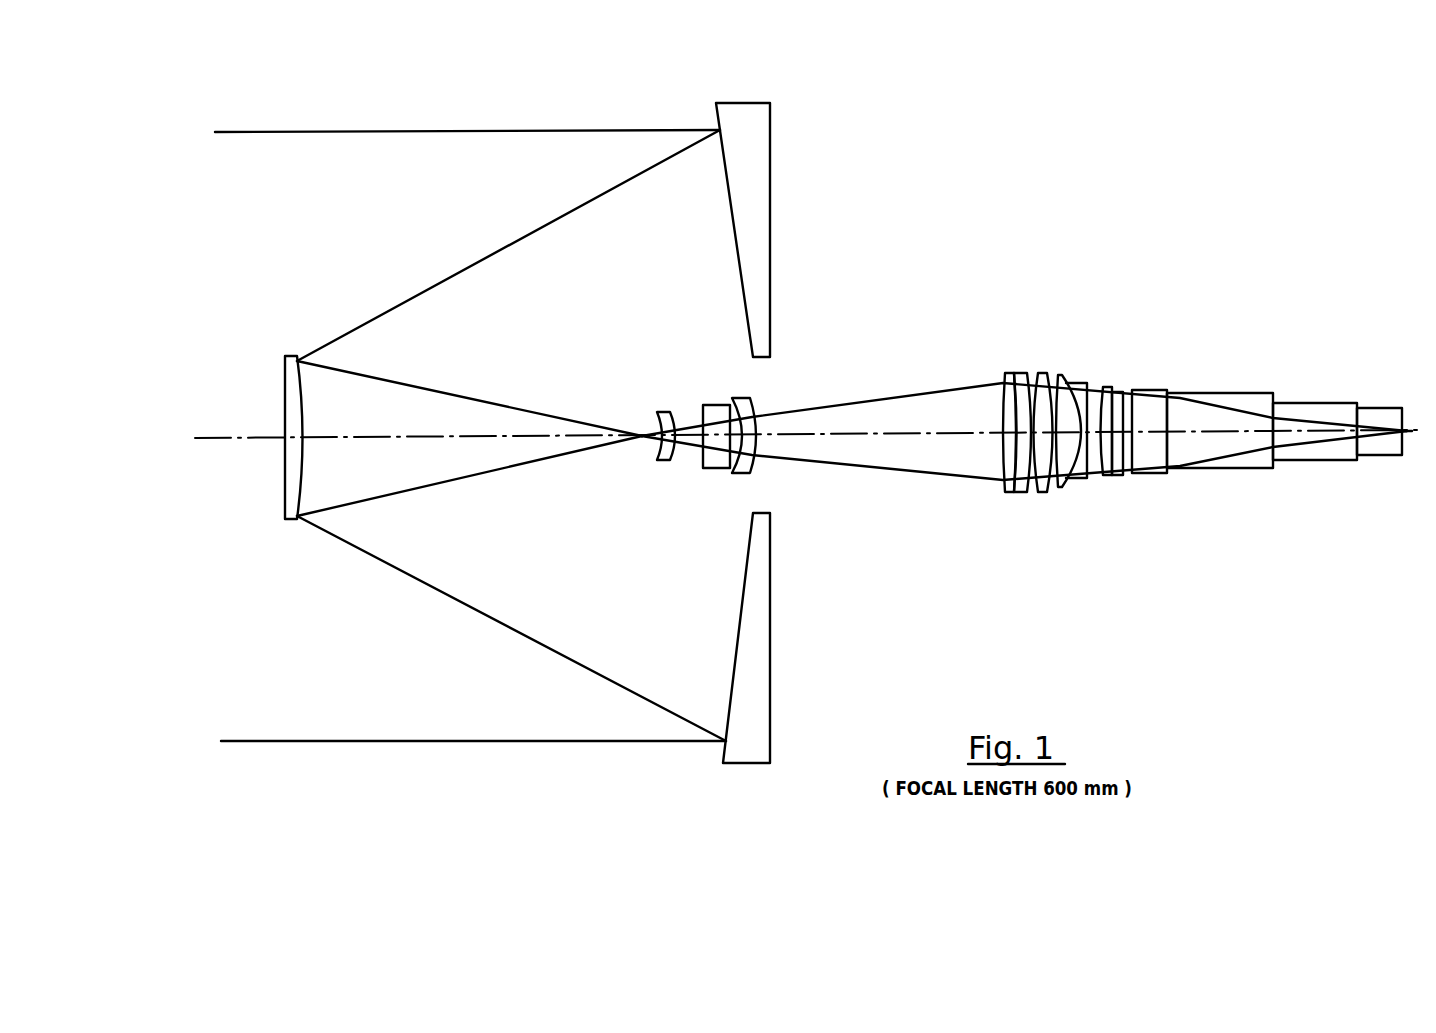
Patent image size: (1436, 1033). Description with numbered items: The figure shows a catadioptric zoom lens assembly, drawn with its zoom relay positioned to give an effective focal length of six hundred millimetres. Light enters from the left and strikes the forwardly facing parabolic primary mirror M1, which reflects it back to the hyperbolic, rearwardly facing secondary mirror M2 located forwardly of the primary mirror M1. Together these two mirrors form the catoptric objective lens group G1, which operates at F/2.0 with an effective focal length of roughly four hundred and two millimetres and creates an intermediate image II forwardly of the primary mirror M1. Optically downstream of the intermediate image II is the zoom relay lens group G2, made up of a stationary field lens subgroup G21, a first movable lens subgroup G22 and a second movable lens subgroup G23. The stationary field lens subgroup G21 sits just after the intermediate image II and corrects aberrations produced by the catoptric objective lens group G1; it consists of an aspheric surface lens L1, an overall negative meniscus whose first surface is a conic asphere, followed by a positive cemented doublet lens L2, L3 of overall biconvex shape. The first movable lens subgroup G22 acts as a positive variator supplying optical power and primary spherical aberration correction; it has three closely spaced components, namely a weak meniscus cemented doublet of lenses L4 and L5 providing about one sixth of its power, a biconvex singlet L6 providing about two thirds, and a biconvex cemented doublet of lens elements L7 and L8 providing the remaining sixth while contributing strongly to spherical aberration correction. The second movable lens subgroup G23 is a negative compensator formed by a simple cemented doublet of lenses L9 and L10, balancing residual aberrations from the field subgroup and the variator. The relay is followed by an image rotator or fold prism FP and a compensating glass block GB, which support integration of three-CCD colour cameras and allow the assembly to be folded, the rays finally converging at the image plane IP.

The primary mirror M1 is at (730, 103).
The secondary mirror M2 is at (283, 378).
The intermediate image II is at (642, 436).
The catoptric objective lens group G1 is at (504, 464).
The zoom relay lens group G2 is at (893, 487).
The stationary field lens subgroup G21 is at (676, 444).
The first movable lens subgroup G22 is at (1048, 451).
The second movable lens subgroup G23 is at (1139, 441).
The aspheric surface lens L1 is at (658, 460).
The doublet lens element L2 is at (712, 468).
The doublet lens element L3 is at (748, 474).
The lens L4 is at (1003, 494).
The lens L5 is at (1023, 494).
The biconvex singlet L6 is at (1042, 494).
The lens element L7 is at (1061, 489).
The lens element L8 is at (1087, 480).
The lens L9 is at (1109, 477).
The lens L10 is at (1151, 451).
The image rotator (fold prism) FP is at (1135, 374).
The compensating glass block GB is at (1280, 389).
The image plane IP is at (1413, 441).